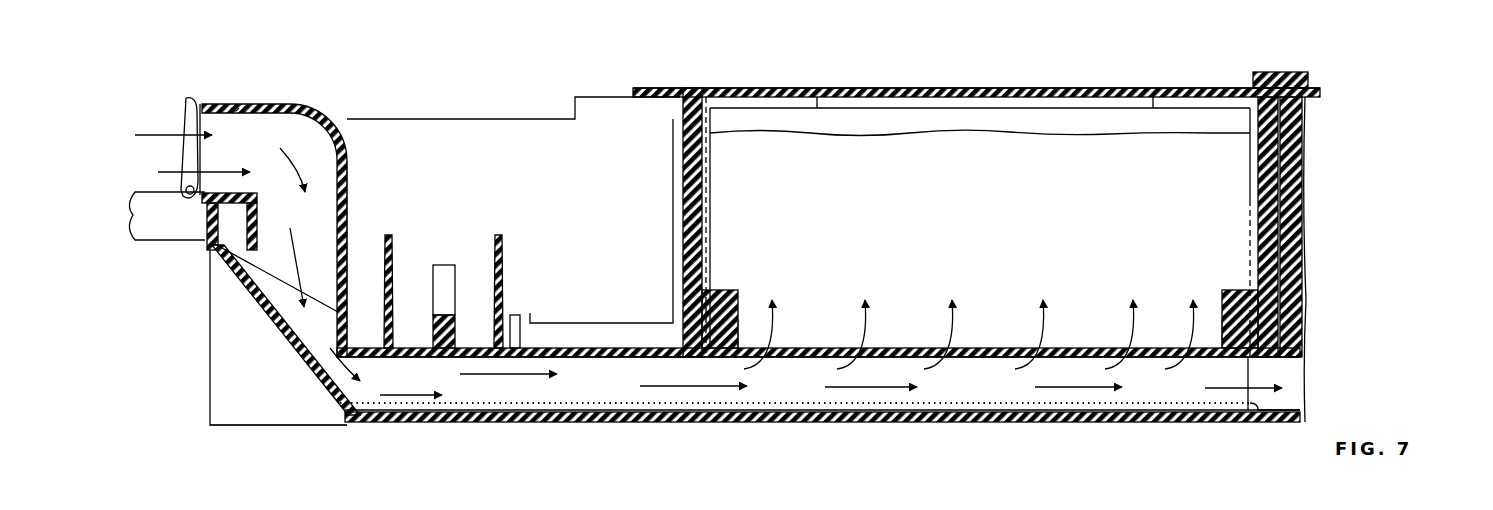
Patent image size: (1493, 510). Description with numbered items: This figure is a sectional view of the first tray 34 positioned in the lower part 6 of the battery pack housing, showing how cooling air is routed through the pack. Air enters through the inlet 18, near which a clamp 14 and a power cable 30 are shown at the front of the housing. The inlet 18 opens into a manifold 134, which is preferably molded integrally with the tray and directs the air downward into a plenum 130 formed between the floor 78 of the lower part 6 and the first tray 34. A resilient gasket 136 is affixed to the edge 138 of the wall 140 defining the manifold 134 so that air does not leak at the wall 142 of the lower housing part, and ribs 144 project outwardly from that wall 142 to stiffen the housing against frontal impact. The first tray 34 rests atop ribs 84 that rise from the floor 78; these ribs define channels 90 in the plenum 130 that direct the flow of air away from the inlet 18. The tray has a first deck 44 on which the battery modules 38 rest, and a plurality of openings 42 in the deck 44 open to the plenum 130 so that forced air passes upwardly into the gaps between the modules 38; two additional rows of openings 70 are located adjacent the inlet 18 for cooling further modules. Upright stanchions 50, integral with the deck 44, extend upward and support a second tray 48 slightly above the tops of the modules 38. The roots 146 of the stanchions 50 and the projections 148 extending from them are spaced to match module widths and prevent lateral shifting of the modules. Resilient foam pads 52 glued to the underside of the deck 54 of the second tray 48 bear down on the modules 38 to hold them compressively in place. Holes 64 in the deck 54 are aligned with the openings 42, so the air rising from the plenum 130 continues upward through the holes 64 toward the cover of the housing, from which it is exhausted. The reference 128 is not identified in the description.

The lower part 6 is at (210, 389).
The clamp 14 is at (188, 150).
The inlet 18 is at (234, 107).
The power cable 30 is at (148, 195).
The first tray 34 is at (335, 327).
The battery module 38 is at (1203, 120).
The openings 42 is at (915, 347).
The first deck 44 is at (618, 348).
The second tray 48 is at (631, 88).
The stanchions 50 is at (678, 175).
The resilient foam pads 52 is at (1050, 103).
The deck 54 is at (868, 88).
The holes 64 is at (823, 88).
The additional rows of openings 70 is at (525, 322).
The floor 78 is at (795, 412).
The ribs 84 is at (572, 399).
The channels 90 is at (627, 395).
The top housing 128 is at (905, 4).
The plenum 130 is at (493, 393).
The manifold 134 is at (349, 188).
The resilient gasket 136 is at (240, 255).
The edge 138 is at (252, 240).
The wall 140 is at (247, 225).
The wall 142 is at (297, 350).
The ribs 144 is at (223, 411).
The roots 146 is at (738, 325).
The projections 148 is at (718, 295).